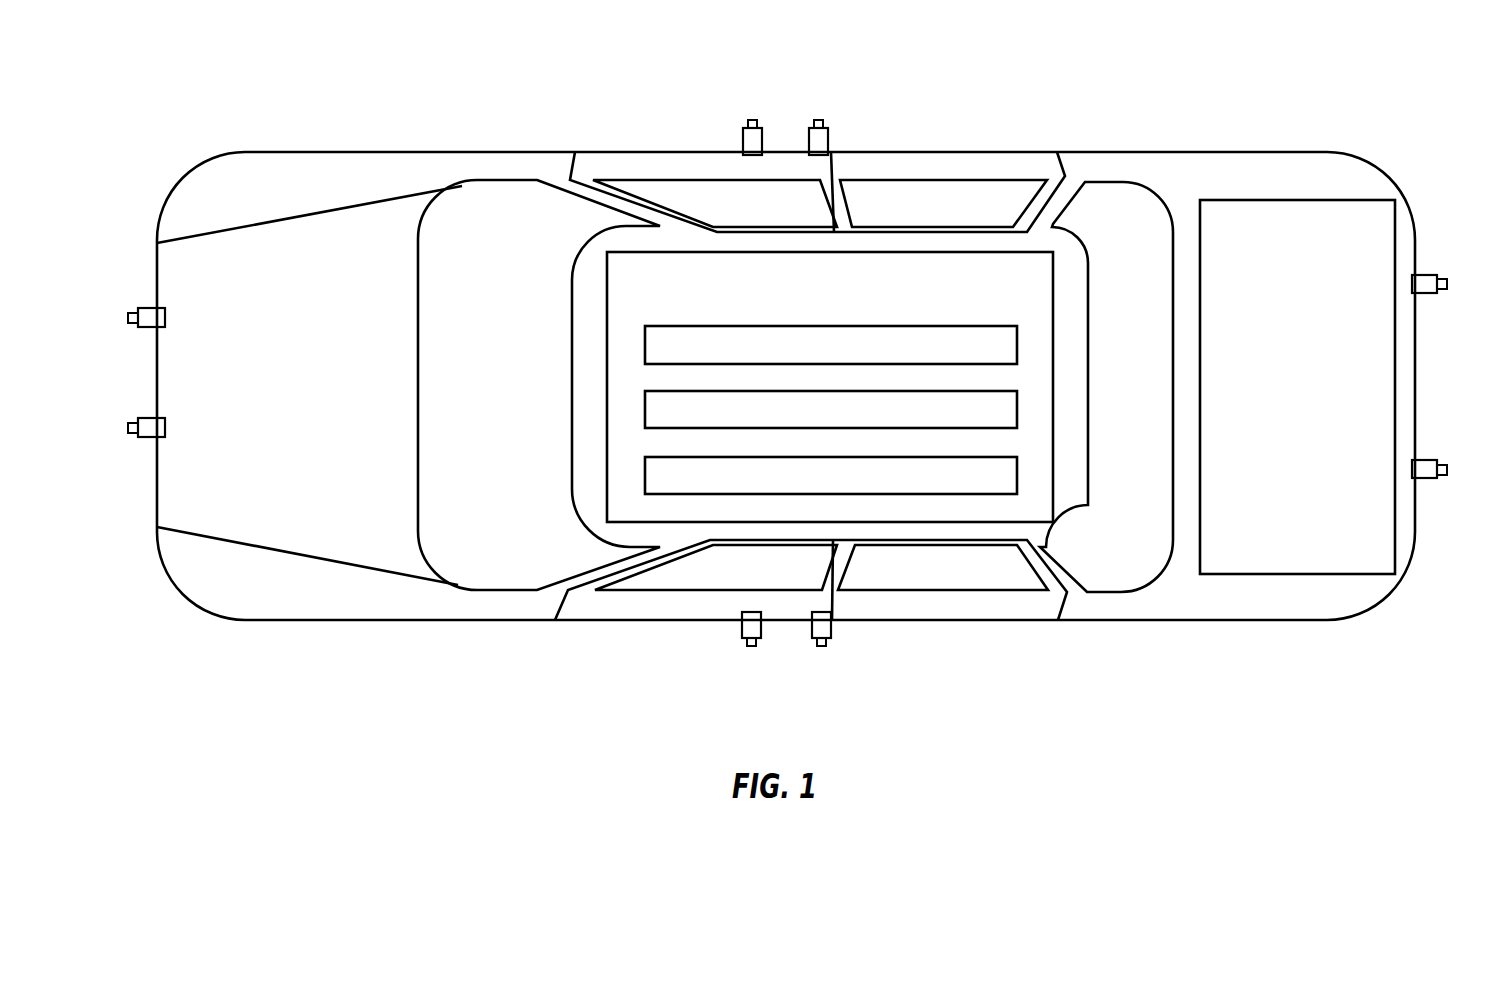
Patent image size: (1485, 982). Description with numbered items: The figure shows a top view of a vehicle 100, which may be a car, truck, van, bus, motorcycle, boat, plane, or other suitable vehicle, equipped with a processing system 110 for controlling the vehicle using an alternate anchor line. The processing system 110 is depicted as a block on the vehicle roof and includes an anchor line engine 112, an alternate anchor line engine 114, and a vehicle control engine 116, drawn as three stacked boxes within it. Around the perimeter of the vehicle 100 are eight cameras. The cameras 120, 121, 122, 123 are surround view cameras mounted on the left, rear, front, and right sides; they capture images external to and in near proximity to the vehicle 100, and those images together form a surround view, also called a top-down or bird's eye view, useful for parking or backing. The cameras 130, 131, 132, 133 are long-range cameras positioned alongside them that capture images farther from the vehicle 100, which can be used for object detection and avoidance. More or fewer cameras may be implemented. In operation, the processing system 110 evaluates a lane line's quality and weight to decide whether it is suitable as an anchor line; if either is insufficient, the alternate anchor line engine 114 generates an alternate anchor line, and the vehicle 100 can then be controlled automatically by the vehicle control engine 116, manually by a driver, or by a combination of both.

The vehicle 100 is at (305, 152).
The processing system 110 is at (845, 285).
The anchor line engine 112 is at (845, 356).
The alternate anchor line engine 114 is at (845, 421).
The vehicle control engine 116 is at (845, 486).
The camera 120 is at (146, 308).
The camera 121 is at (748, 647).
The camera 122 is at (752, 120).
The camera 123 is at (1422, 295).
The camera 130 is at (146, 418).
The camera 131 is at (818, 647).
The camera 132 is at (818, 120).
The camera 133 is at (1422, 480).